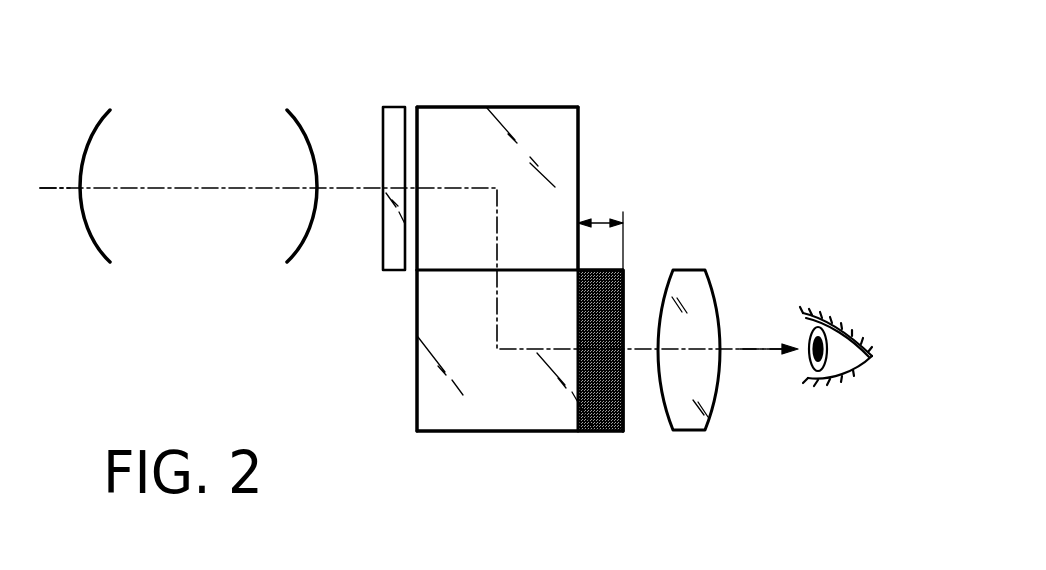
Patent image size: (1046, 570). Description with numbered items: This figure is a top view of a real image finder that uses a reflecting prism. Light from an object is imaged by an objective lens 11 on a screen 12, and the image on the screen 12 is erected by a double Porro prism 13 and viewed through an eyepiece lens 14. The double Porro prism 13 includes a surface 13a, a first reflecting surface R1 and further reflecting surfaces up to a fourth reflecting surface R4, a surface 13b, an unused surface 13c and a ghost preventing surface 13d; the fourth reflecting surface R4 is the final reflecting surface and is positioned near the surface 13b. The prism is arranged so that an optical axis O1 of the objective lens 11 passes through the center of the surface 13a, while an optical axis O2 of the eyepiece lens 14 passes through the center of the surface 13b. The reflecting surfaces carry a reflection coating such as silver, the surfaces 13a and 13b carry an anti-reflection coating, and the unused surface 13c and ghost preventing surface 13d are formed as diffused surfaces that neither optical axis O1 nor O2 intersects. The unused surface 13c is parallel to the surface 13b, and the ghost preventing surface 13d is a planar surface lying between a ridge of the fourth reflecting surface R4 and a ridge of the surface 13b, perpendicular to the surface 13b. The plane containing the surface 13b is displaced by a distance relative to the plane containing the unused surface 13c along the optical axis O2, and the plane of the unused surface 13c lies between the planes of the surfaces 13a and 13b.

The optical axis of the objective lens O1 is at (48, 188).
The objective lens 11 is at (204, 207).
The screen 12 is at (383, 252).
The double Porro prism 13 is at (543, 88).
The surface 13a is at (417, 128).
The surface 13b is at (623, 412).
The unused surface 13c is at (578, 130).
The ghost preventing surface 13d is at (597, 395).
The first reflecting surface R1 is at (455, 107).
The fourth reflecting surface R4 is at (480, 395).
The eyepiece lens 14 is at (682, 268).
The optical axis of the eyepiece lens O2 is at (757, 348).